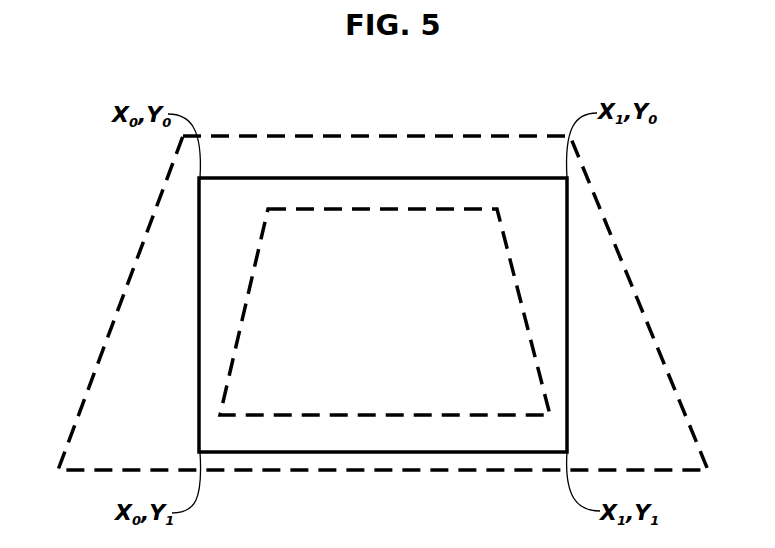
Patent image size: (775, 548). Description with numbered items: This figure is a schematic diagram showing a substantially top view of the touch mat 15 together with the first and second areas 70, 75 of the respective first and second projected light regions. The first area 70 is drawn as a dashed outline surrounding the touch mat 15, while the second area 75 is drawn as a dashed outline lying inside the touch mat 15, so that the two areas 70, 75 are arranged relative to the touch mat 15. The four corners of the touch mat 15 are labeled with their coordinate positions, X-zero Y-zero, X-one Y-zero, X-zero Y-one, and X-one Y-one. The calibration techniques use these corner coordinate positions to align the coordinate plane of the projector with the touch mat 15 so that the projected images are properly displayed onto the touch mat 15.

The first area 70 is at (127, 291).
The touch mat 15 is at (197, 325).
The second area 75 is at (507, 240).